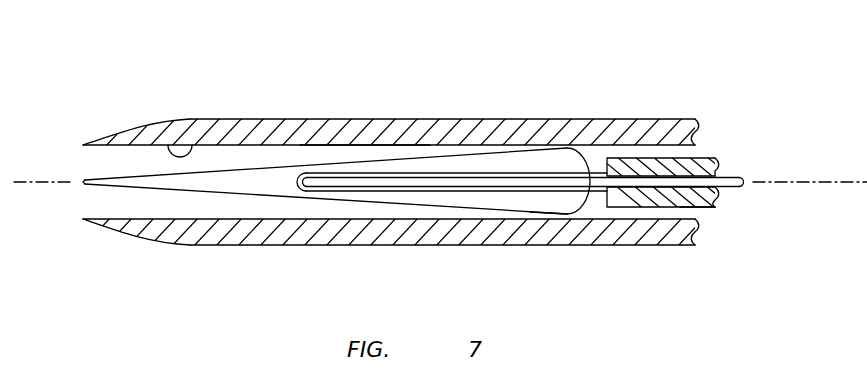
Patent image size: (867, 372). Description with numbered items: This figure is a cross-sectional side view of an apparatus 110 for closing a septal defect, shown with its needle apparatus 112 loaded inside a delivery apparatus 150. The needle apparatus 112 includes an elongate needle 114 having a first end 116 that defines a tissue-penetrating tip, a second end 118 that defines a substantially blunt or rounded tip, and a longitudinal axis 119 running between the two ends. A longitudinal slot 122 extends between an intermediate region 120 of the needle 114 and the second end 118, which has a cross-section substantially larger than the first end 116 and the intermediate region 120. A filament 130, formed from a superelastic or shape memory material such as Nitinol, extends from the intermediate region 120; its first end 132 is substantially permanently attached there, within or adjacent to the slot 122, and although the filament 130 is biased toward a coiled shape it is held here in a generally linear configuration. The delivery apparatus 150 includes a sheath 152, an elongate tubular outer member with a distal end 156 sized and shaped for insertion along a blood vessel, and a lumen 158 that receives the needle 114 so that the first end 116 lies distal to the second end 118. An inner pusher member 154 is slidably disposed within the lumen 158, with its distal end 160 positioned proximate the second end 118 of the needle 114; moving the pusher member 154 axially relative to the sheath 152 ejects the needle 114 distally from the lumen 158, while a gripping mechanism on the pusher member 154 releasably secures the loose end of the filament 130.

The apparatus 110 is at (550, 65).
The needle apparatus 112 is at (363, 158).
The elongate needle 114 is at (266, 168).
The first end 116 is at (90, 186).
The second end 118 is at (568, 203).
The longitudinal axis 119 is at (37, 181).
The intermediate region 120 is at (290, 199).
The longitudinal slot 122 is at (494, 188).
The filament 130 is at (571, 150).
The first end of filament 132 is at (334, 192).
The delivery apparatus 150 is at (628, 251).
The sheath 152 is at (462, 118).
The inner pusher member 154 is at (709, 218).
The distal end of sheath 156 is at (106, 139).
The lumen 158 is at (190, 143).
The distal end of pusher member 160 is at (700, 158).